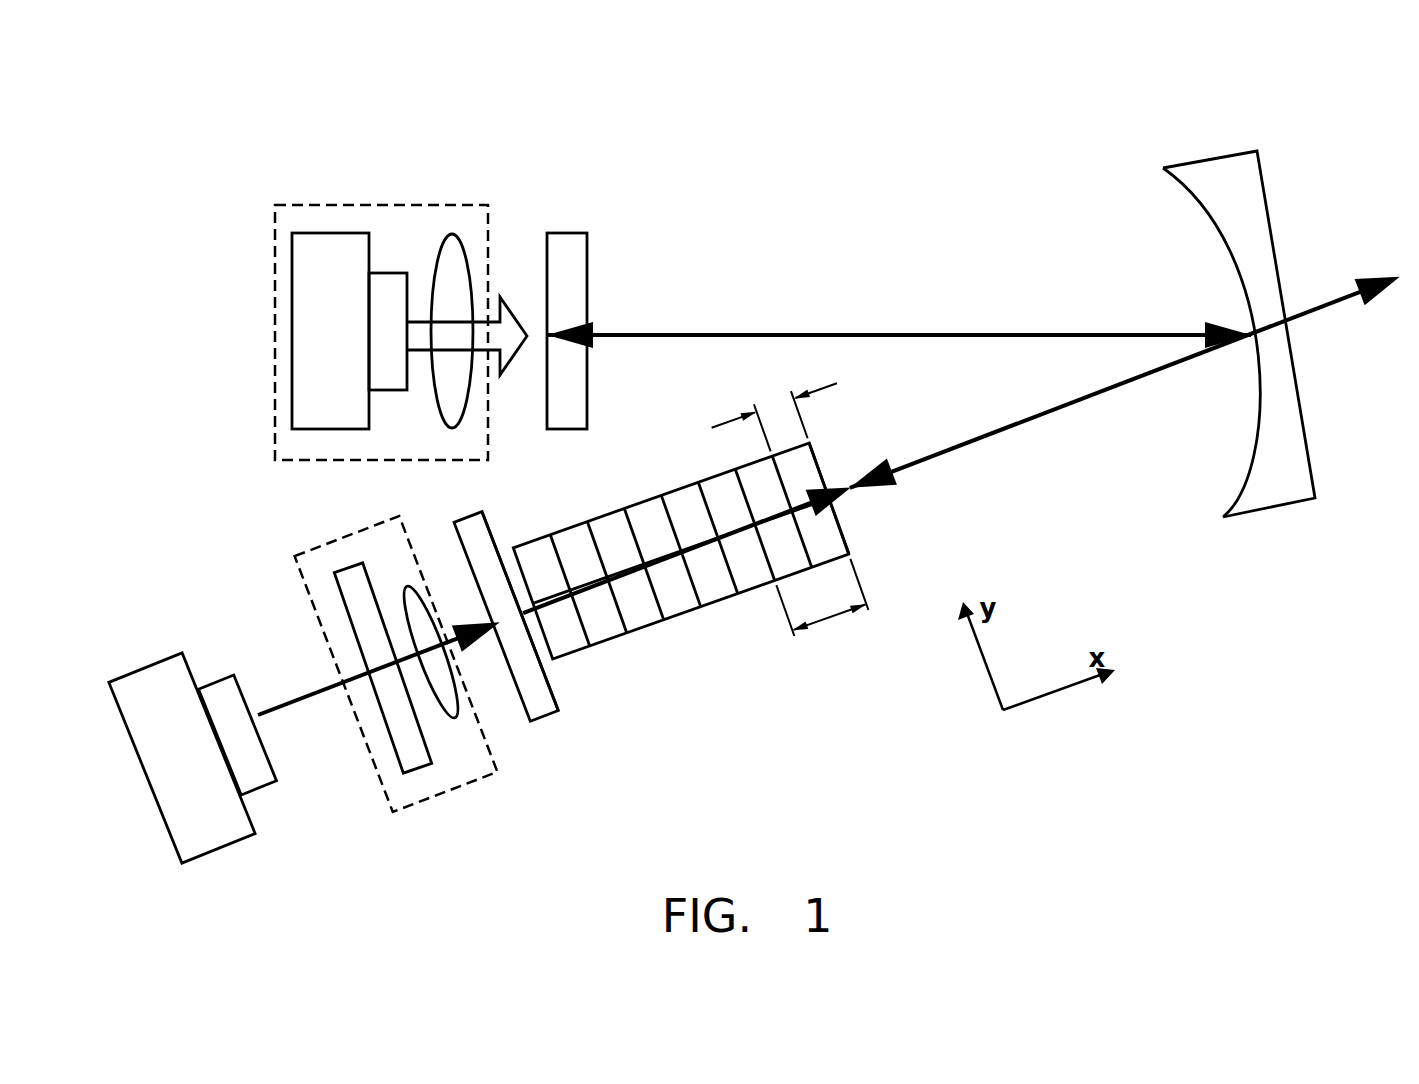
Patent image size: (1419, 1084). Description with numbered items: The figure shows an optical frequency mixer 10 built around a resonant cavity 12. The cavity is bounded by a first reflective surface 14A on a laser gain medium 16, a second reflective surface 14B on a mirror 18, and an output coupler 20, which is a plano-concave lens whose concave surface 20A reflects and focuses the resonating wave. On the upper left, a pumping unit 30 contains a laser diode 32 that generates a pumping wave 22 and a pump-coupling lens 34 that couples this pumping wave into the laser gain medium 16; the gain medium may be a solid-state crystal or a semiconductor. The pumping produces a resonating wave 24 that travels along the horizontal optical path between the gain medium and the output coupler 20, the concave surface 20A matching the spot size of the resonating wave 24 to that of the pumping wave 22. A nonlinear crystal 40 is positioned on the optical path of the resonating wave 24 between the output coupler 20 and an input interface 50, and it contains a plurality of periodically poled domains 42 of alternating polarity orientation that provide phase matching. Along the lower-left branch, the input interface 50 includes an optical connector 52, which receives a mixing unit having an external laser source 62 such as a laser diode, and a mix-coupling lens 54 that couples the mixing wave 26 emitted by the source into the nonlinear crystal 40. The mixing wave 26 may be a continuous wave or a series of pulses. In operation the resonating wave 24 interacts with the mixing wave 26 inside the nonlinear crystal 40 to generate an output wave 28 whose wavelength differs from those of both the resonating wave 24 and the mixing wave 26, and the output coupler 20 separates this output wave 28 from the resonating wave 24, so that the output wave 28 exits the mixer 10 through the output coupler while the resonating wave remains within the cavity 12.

The optical frequency mixer 10 is at (1014, 150).
The resonant cavity 12 is at (776, 262).
The first reflective surface 14A is at (548, 250).
The second reflective surface 14B is at (557, 692).
The laser gain medium 16 is at (589, 283).
The mirror 18 is at (553, 652).
The output coupler 20 is at (1218, 370).
The concave surface 20A is at (1254, 450).
The pumping wave 22 is at (513, 358).
The resonating wave 24 is at (1007, 335).
The mixing wave 26 is at (468, 605).
The output wave 28 is at (1332, 305).
The pumping unit 30 is at (381, 298).
The laser diode 32 is at (332, 233).
The pump-coupling lens 34 is at (452, 235).
The nonlinear crystal 40 is at (713, 533).
The periodically poled domains 42 is at (833, 538).
The input interface 50 is at (396, 675).
The optical connector 52 is at (340, 572).
The mix-coupling lens 54 is at (401, 588).
The external laser source 62 is at (140, 669).